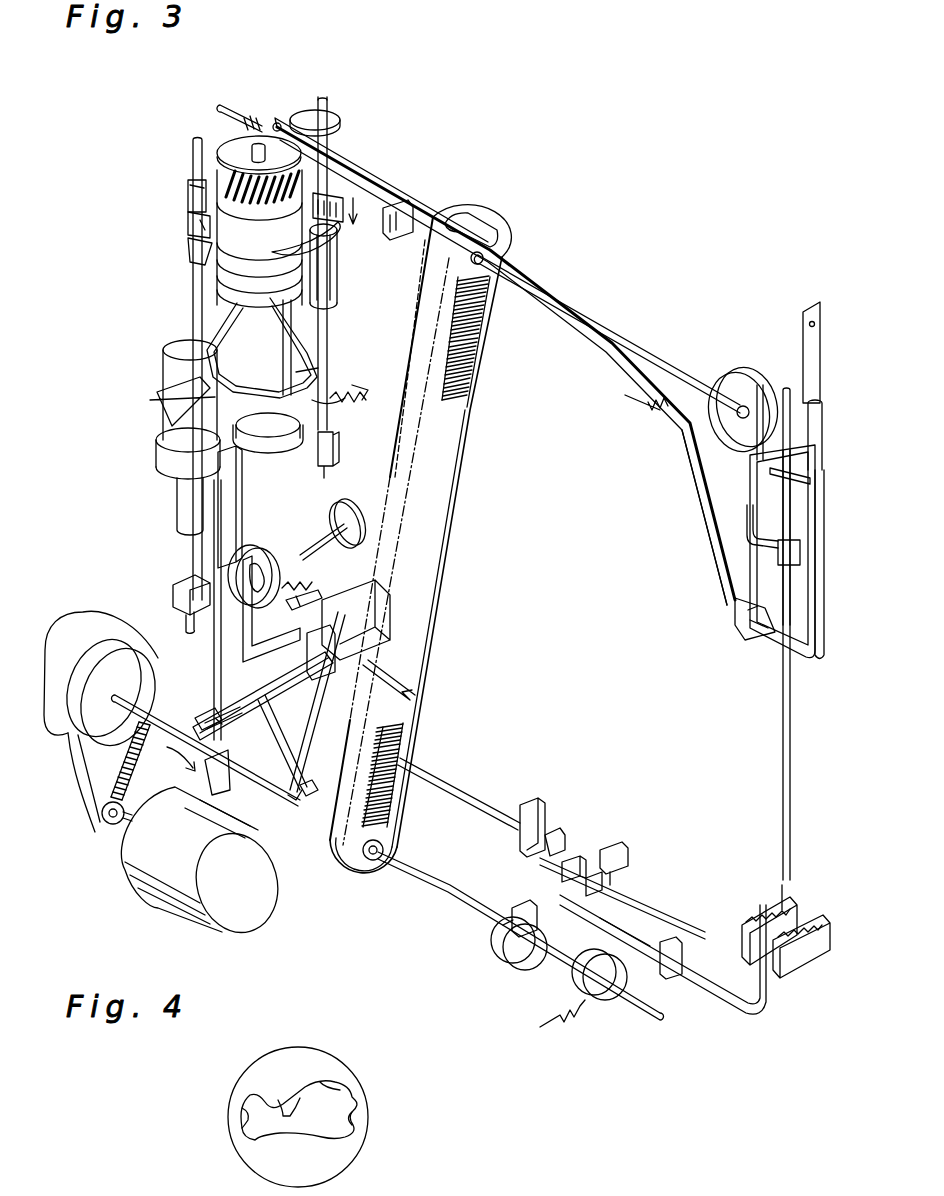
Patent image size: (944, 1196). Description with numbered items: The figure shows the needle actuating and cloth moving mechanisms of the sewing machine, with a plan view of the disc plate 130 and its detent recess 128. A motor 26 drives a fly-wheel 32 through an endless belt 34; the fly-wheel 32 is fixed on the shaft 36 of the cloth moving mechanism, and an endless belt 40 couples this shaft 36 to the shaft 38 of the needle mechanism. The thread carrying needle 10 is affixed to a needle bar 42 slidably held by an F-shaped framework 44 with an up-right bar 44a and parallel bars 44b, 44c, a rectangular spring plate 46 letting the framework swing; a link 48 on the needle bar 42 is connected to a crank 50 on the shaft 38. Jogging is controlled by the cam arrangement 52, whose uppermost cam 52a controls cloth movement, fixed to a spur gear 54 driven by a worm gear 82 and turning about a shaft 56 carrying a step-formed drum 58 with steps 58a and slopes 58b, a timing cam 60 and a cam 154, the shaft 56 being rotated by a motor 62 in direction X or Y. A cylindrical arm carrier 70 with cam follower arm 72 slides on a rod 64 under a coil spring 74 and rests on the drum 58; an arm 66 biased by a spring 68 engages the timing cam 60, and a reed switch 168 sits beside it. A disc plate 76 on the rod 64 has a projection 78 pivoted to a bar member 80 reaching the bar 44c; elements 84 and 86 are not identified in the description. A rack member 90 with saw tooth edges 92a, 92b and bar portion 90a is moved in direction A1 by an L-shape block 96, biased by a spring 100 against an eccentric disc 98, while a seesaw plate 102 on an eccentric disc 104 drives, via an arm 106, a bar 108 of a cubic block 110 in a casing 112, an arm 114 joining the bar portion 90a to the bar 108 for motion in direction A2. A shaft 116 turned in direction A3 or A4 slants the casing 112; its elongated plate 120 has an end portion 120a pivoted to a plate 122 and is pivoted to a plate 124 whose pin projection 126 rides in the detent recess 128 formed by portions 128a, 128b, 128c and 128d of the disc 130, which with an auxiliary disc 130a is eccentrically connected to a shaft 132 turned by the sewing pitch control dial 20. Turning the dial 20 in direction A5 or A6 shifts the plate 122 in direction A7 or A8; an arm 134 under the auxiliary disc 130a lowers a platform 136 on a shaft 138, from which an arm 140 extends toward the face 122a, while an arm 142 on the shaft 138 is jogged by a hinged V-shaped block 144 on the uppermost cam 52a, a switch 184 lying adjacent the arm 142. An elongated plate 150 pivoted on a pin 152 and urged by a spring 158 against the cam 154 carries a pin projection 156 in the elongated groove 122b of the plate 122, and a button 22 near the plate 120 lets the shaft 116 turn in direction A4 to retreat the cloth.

In FIG. 3, the thread carrying needle 10 is at (804, 887).
In FIG. 3, the sewing pitch control dial 20 is at (400, 522).
In FIG. 3, the button 22 is at (370, 612).
In FIG. 3, the motor 26 is at (165, 880).
In FIG. 3, the fly-wheel 32 is at (100, 735).
In FIG. 3, the endless belt 34 is at (112, 822).
In FIG. 3, the shaft 36 is at (425, 876).
In FIG. 3, the shaft 38 is at (618, 335).
In FIG. 3, the endless belt 40 is at (478, 364).
In FIG. 3, the needle bar 42 is at (783, 718).
In FIG. 3, the F-shaped framework 44 is at (800, 588).
In FIG. 3, the up-right bar 44a is at (745, 525).
In FIG. 3, the parallel bar 44b is at (775, 492).
In FIG. 3, the parallel bar 44c is at (748, 620).
In FIG. 3, the rectangular spring plate 46 is at (806, 345).
In FIG. 3, the link 48 is at (705, 468).
In FIG. 3, the crank 50 is at (735, 395).
In FIG. 3, the cam arrangement 52 is at (237, 258).
In FIG. 3, the uppermost cam 52a is at (195, 148).
In FIG. 3, the spur gear 54 is at (237, 140).
In FIG. 3, the shaft 56 is at (260, 330).
In FIG. 3, the step-formed drum 58 is at (245, 415).
In FIG. 3, the steps 58a is at (310, 378).
In FIG. 3, the slopes 58b is at (268, 421).
In FIG. 3, the timing cam 60 is at (240, 447).
In FIG. 3, the motor 62 is at (178, 355).
In FIG. 3, the rod 64 is at (326, 320).
In FIG. 3, the arm 66 is at (336, 442).
In FIG. 3, the spring 68 is at (358, 393).
In FIG. 3, the cylindrical arm carrier 70 is at (330, 290).
In FIG. 3, the cam follower arm 72 is at (335, 262).
In FIG. 3, the coil spring 74 is at (345, 200).
In FIG. 3, the disc plate 76 is at (292, 118).
In FIG. 3, the projection 78 is at (274, 122).
In FIG. 3, the bar member 80 is at (565, 300).
In FIG. 3, the worm gear 82 is at (240, 114).
In FIG. 3, the block 84 is at (400, 215).
In FIG. 3, the cap 86 is at (478, 222).
In FIG. 3, the rack member 90 is at (690, 950).
In FIG. 3, the bar portion 90a is at (650, 930).
In FIG. 3, the saw tooth edge 92a is at (755, 925).
In FIG. 3, the saw tooth edge 92b is at (790, 980).
In FIG. 3, the L-shape block 96 is at (672, 980).
In FIG. 3, the disc 98 is at (585, 990).
In FIG. 3, the spring 100 is at (586, 993).
In FIG. 3, the seesaw plate 102 is at (528, 912).
In FIG. 3, the disc 104 is at (512, 953).
In FIG. 3, the arm 106 is at (616, 848).
In FIG. 3, the bar 108 is at (572, 862).
In FIG. 3, the cubic block 110 is at (552, 835).
In FIG. 3, the casing 112 is at (530, 805).
In FIG. 3, the arm 114 is at (545, 859).
In FIG. 3, the shaft 116 is at (432, 764).
In FIG. 3, the elongated plate 120 is at (385, 692).
In FIG. 3, the end portion 120a is at (336, 642).
In FIG. 3, the plate 122 is at (280, 762).
In FIG. 3, the face 122a is at (230, 702).
In FIG. 3, the elongated groove 122b is at (238, 780).
In FIG. 3, the plate 124 is at (316, 707).
In FIG. 3, the pin projection 126 is at (188, 614).
In FIG. 3, the detent recess 128 is at (329, 587).
In FIG. 4, the detent recess 128 is at (340, 1138).
In FIG. 4, the recess portion 128a is at (356, 1118).
In FIG. 4, the recess portion 128b is at (345, 1090).
In FIG. 4, the recess portion 128c is at (285, 1108).
In FIG. 4, the recess portion 128d is at (246, 1114).
In FIG. 3, the disc plate 130 is at (240, 562).
In FIG. 4, the disc plate 130 is at (320, 1060).
In FIG. 3, the auxiliary disc 130a is at (340, 512).
In FIG. 3, the shaft 132 is at (355, 535).
In FIG. 3, the arm 134 is at (213, 580).
In FIG. 3, the platform 136 is at (178, 598).
In FIG. 3, the shaft 138 is at (196, 297).
In FIG. 3, the arm 140 is at (243, 640).
In FIG. 3, the arm 142 is at (190, 190).
In FIG. 3, the V-shaped block 144 is at (190, 222).
In FIG. 3, the elongated plate 150 is at (225, 500).
In FIG. 3, the pin 152 is at (215, 528).
In FIG. 3, the cam 154 is at (215, 440).
In FIG. 3, the pin projection 156 is at (214, 720).
In FIG. 3, the spring 158 is at (166, 771).
In FIG. 3, the reed switch 168 is at (392, 480).
In FIG. 3, the reed switch 184 is at (197, 250).
In FIG. 3, the arrow A1 is at (628, 898).
In FIG. 3, the arrow A2 is at (625, 896).
In FIG. 3, the arrow A3 is at (496, 782).
In FIG. 3, the arrow A4 is at (464, 813).
In FIG. 3, the arrow A5 is at (305, 542).
In FIG. 3, the arrow A6 is at (341, 547).
In FIG. 3, the arrow A7 is at (247, 707).
In FIG. 3, the arrow A8 is at (330, 701).
In FIG. 3, the arrow X is at (292, 309).
In FIG. 3, the arrow Y is at (300, 342).